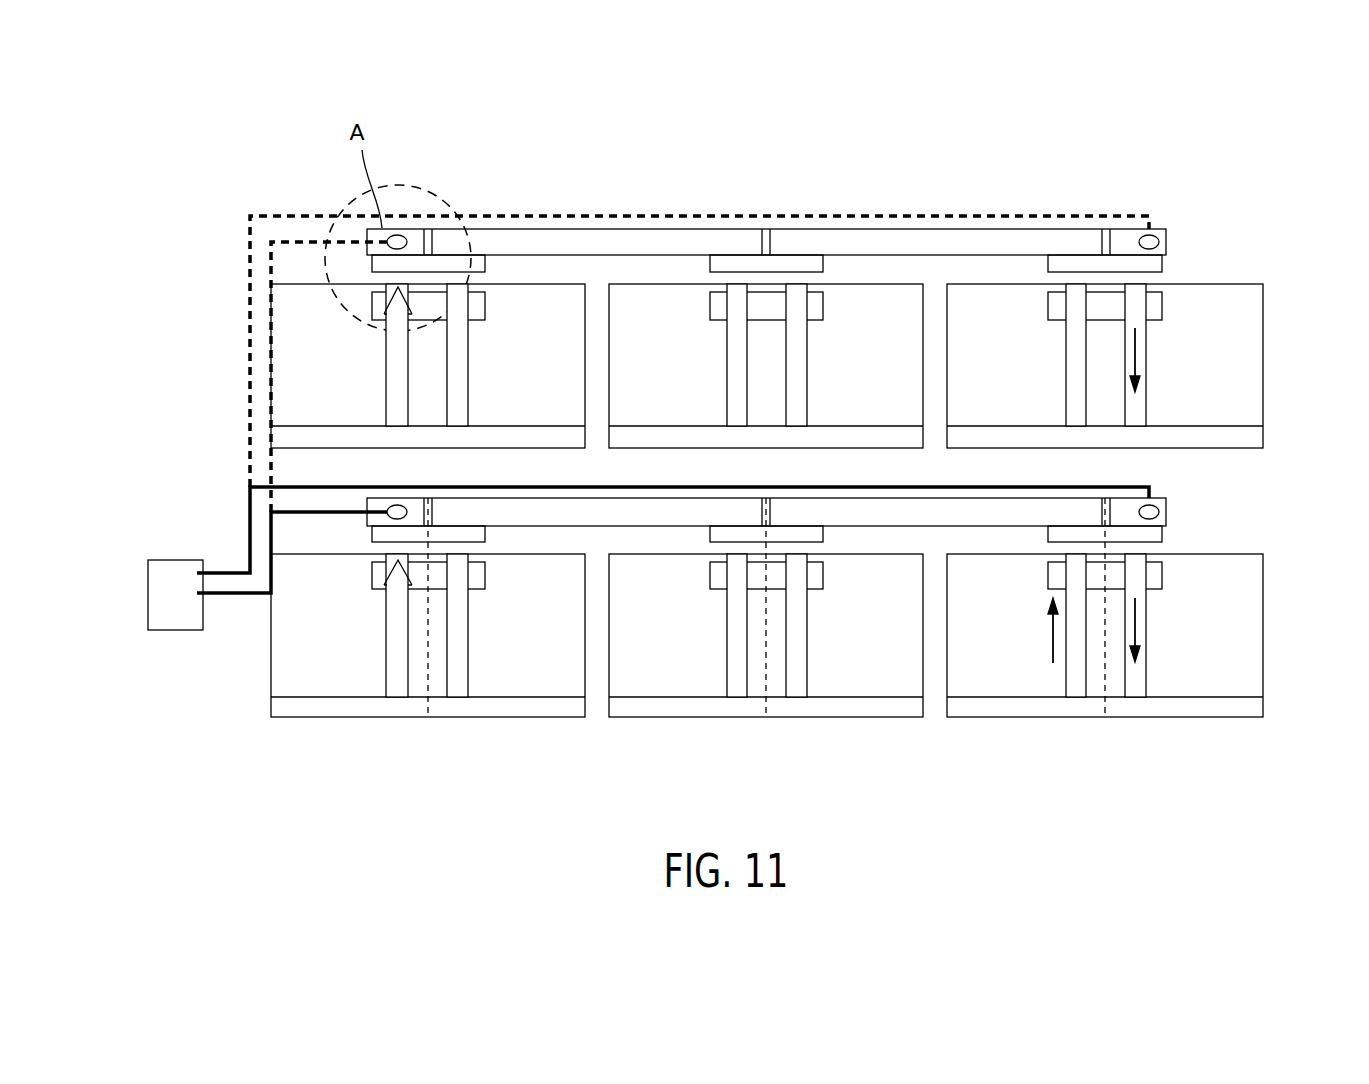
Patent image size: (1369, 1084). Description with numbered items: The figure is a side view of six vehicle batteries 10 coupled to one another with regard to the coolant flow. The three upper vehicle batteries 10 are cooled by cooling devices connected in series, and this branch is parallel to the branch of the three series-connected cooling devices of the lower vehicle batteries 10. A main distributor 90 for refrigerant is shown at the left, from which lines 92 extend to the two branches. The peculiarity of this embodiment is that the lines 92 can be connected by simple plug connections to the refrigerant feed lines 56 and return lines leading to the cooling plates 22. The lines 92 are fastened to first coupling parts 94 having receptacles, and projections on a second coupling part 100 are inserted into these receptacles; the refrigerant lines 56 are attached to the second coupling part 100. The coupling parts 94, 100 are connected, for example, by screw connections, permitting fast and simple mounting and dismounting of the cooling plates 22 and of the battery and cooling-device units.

The vehicle battery 10 is at (1233, 362).
The cooling plate 22 is at (1233, 437).
The refrigerant line 56 is at (1135, 404).
The main distributor 90 is at (173, 609).
The line 92 is at (250, 312).
The first coupling part 94 is at (1163, 262).
The second coupling part 100 is at (1163, 305).